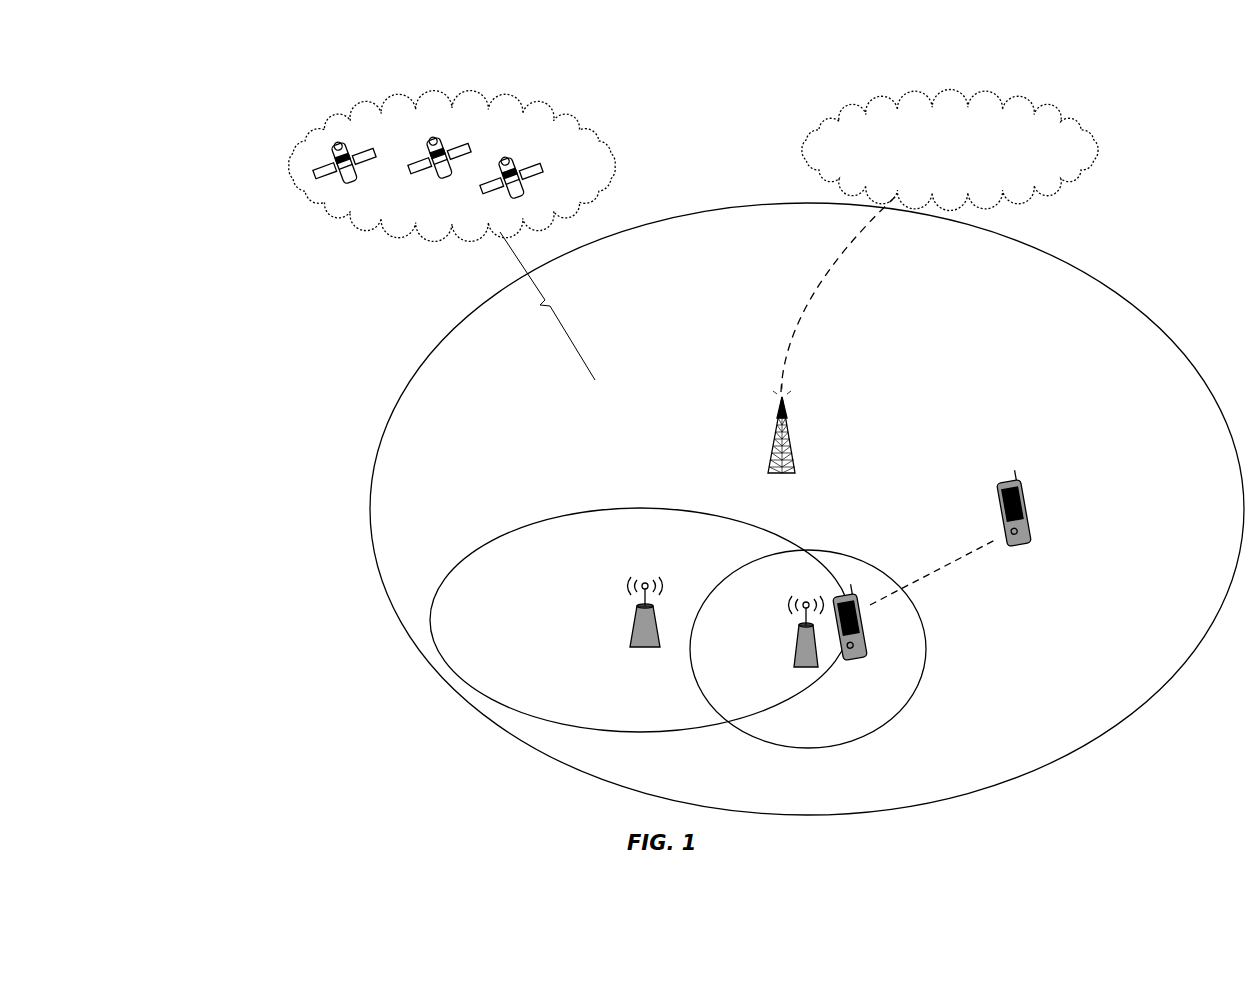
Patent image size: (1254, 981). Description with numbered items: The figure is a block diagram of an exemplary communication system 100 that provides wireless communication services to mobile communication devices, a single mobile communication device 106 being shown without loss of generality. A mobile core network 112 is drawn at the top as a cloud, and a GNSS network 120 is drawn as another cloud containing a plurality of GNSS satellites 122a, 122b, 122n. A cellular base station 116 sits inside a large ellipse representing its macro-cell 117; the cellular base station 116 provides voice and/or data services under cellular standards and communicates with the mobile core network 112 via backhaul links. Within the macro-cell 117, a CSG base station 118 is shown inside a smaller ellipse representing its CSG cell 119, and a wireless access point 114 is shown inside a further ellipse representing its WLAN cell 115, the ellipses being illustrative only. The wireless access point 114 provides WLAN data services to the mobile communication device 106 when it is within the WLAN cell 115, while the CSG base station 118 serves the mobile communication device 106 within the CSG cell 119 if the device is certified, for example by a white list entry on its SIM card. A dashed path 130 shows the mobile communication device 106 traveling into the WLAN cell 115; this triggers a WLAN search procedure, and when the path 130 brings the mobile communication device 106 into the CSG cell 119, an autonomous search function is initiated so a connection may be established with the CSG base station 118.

The communication system 100 is at (158, 72).
The mobile communication device 106 is at (858, 660).
The mobile core network 112 is at (965, 170).
The wireless access point 114 is at (792, 645).
The WLAN cell 115 is at (740, 571).
The cellular base station 116 is at (776, 436).
The macro-cell 117 is at (420, 368).
The CSG base station 118 is at (630, 626).
The CSG cell 119 is at (468, 561).
The GNSS network 120 is at (292, 150).
The GNSS satellite 122a is at (355, 154).
The GNSS satellite 122b is at (452, 150).
The GNSS satellite 122n is at (527, 177).
The path 130 is at (933, 571).